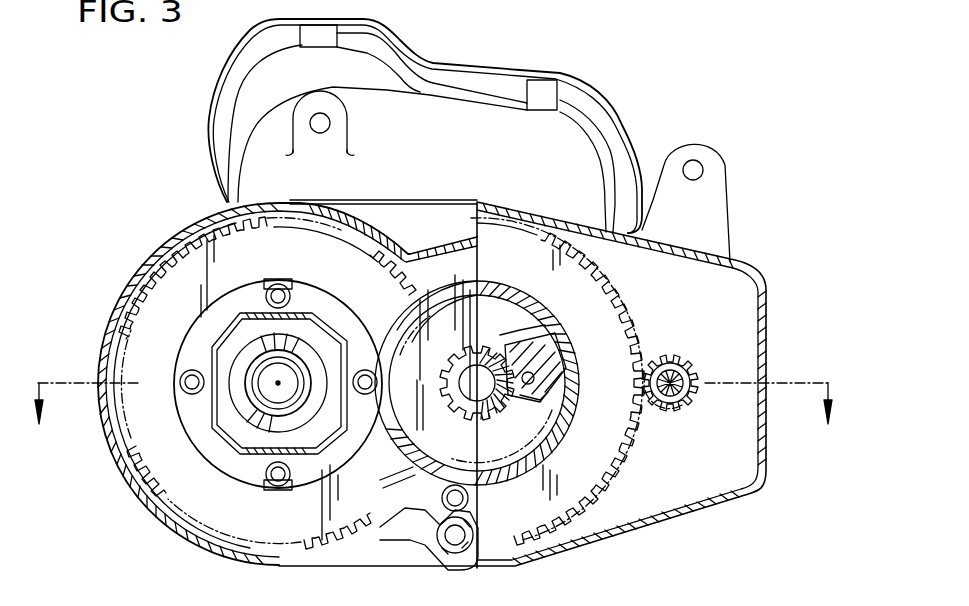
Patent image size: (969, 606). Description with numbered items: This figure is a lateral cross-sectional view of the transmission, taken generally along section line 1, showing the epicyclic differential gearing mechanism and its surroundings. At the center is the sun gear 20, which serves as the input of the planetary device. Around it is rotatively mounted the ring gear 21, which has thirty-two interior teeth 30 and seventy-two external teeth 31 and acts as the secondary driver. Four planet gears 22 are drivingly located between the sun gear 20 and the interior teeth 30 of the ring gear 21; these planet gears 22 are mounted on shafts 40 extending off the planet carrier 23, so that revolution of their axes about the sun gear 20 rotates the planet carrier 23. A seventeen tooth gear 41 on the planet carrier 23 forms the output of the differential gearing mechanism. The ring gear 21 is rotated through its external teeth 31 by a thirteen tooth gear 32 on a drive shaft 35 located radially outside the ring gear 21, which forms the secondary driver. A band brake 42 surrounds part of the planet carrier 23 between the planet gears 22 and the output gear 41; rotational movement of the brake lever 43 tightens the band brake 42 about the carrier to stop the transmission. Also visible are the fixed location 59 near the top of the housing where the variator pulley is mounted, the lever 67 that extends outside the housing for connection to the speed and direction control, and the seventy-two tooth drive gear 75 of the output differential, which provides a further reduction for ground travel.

The section line 1- 1 is at (435, 385).
The brake lever 43 is at (437, 0).
The fixed location 59 is at (330, 123).
The lever 67 is at (710, 226).
The ring gear 21 is at (606, 460).
The drive gear 75 is at (290, 523).
The band brake 42 is at (463, 281).
The interior teeth 30 is at (491, 303).
The external teeth 31 is at (625, 300).
The seventeen tooth gear 41 is at (448, 397).
The planet carrier 23 is at (484, 358).
The sun gear 20 is at (503, 350).
The shafts 40 is at (548, 379).
The planet gear 22 is at (544, 393).
The thirteen tooth gear 32 is at (684, 352).
The drive shaft 35 is at (663, 405).